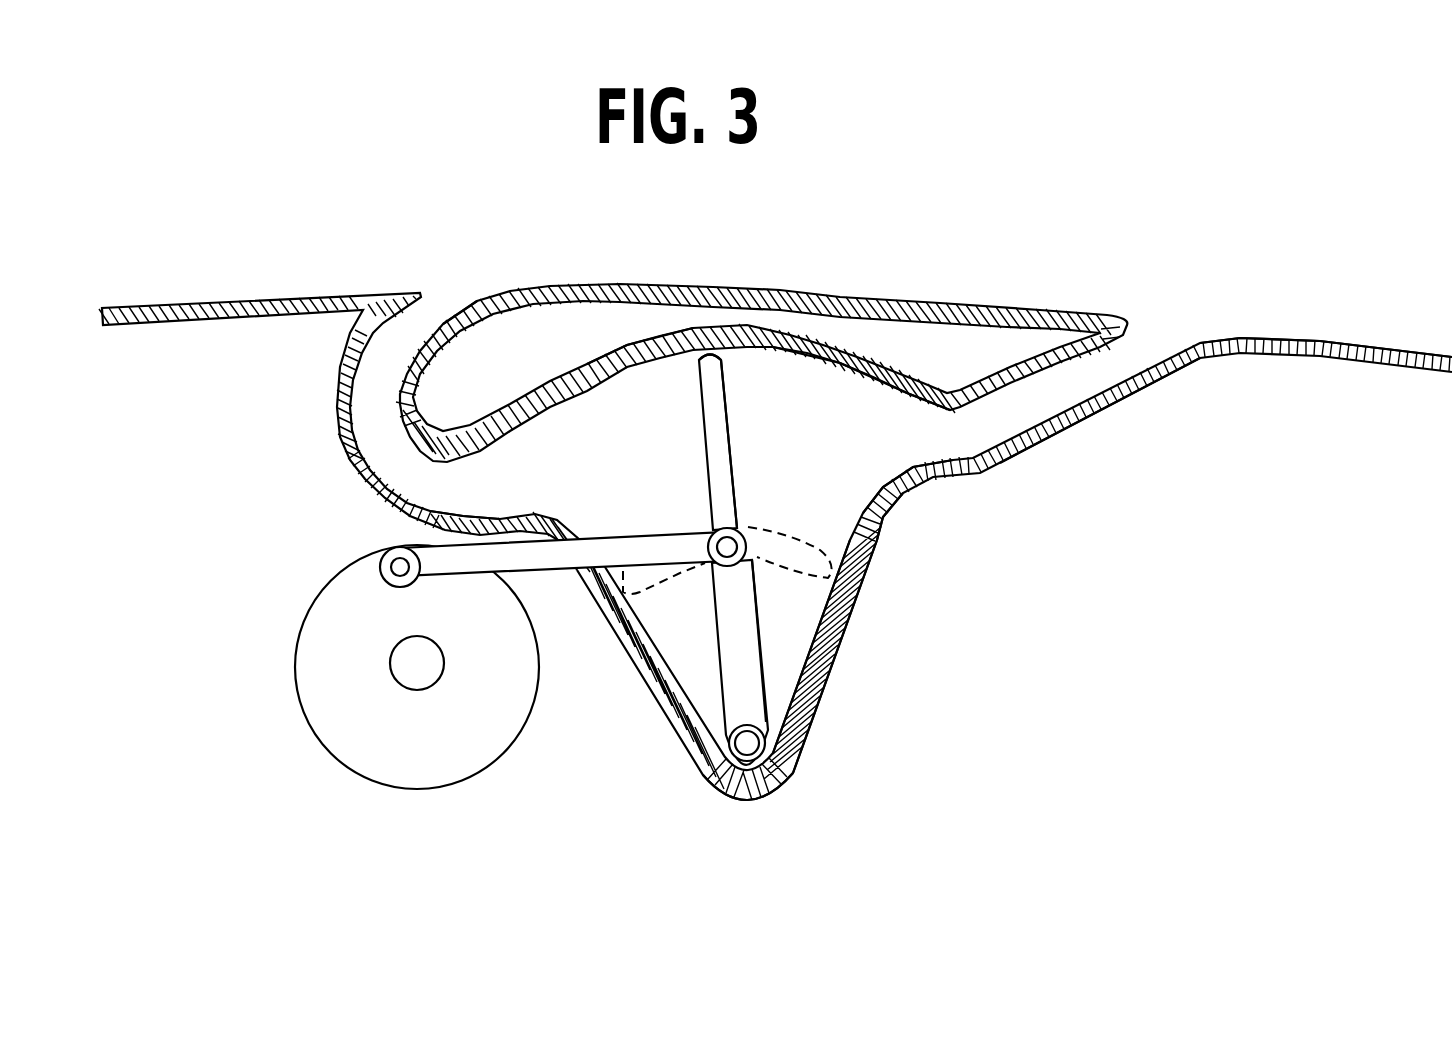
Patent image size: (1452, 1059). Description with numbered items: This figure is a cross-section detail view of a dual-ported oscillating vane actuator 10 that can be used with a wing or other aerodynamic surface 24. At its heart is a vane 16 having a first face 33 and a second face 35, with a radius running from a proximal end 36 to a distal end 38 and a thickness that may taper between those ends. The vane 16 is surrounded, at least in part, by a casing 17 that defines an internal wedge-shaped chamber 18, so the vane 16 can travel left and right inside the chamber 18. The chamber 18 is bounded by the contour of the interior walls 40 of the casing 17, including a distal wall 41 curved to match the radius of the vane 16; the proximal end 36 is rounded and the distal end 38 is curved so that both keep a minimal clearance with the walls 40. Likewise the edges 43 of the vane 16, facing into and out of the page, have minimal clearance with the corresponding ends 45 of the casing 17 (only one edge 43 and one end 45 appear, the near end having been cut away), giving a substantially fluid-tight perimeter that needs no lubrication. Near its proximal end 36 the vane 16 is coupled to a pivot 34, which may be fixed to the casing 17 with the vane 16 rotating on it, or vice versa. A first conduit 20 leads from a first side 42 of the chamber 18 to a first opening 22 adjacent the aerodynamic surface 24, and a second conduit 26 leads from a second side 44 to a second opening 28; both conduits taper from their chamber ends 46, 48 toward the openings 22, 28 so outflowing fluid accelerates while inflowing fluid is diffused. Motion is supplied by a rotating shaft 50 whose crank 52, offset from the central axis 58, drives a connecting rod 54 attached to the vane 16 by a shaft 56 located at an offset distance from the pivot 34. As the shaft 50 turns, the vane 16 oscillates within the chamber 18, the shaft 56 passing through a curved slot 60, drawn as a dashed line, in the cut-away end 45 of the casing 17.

The dual-ported oscillating vane actuator 10 is at (978, 637).
The vane 16 is at (757, 676).
The casing 17 is at (675, 745).
The wedge-shaped chamber 18 is at (853, 400).
The first conduit 20 is at (378, 417).
The first opening 22 is at (445, 298).
The aerodynamic surface 24 is at (800, 292).
The second conduit 26 is at (1050, 393).
The second opening 28 is at (1147, 338).
The first face 33 is at (700, 437).
The pivot 34 is at (727, 773).
The second face 35 is at (725, 402).
The proximal end 36 is at (793, 713).
The distal end 38 is at (725, 358).
The interior walls 40 is at (793, 773).
The distal wall 41 is at (626, 348).
The first side 42 is at (623, 465).
The edge 43 is at (750, 695).
The second side 44 is at (820, 480).
The end 45 is at (793, 593).
The chamber end 46 is at (470, 487).
The chamber end 48 is at (953, 440).
The rotating shaft 50 is at (305, 718).
The crank 52 is at (387, 580).
The connecting rod 54 is at (389, 547).
The shaft 56 is at (715, 567).
The central axis 58 is at (407, 680).
The slot 60 is at (824, 558).